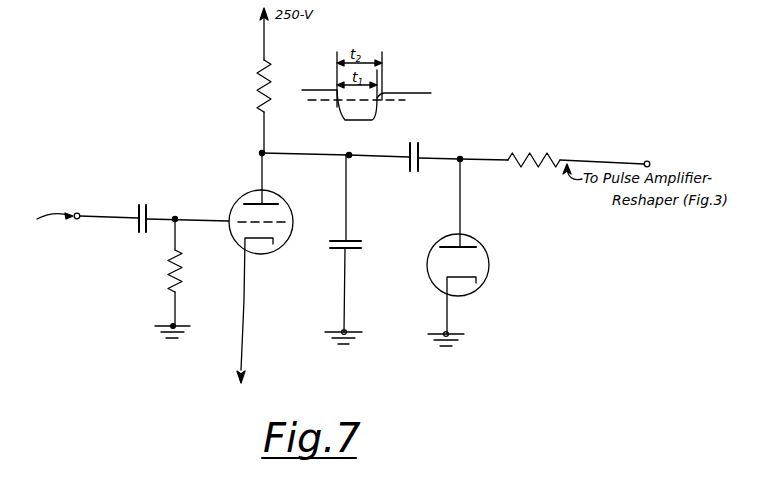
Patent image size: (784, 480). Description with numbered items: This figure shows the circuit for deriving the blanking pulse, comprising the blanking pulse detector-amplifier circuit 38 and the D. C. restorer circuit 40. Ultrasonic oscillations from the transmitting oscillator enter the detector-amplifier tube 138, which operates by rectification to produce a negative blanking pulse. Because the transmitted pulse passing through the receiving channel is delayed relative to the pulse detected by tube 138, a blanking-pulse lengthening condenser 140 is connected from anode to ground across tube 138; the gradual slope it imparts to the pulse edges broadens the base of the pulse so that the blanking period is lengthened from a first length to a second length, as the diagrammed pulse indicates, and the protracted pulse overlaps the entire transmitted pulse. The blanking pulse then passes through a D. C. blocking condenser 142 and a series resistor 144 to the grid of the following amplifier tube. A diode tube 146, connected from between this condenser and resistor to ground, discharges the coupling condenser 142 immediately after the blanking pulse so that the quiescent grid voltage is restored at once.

The detector amplifier circuit 38 is at (115, 250).
The D. C. restorer circuit 40 is at (525, 252).
The detector-amplifier tube 138 is at (258, 256).
The blanking-pulse lengthening condenser 140 is at (356, 236).
The D. C. blocking condenser 142 is at (421, 148).
The series resistor 144 is at (530, 154).
The diode tube 146 is at (485, 244).